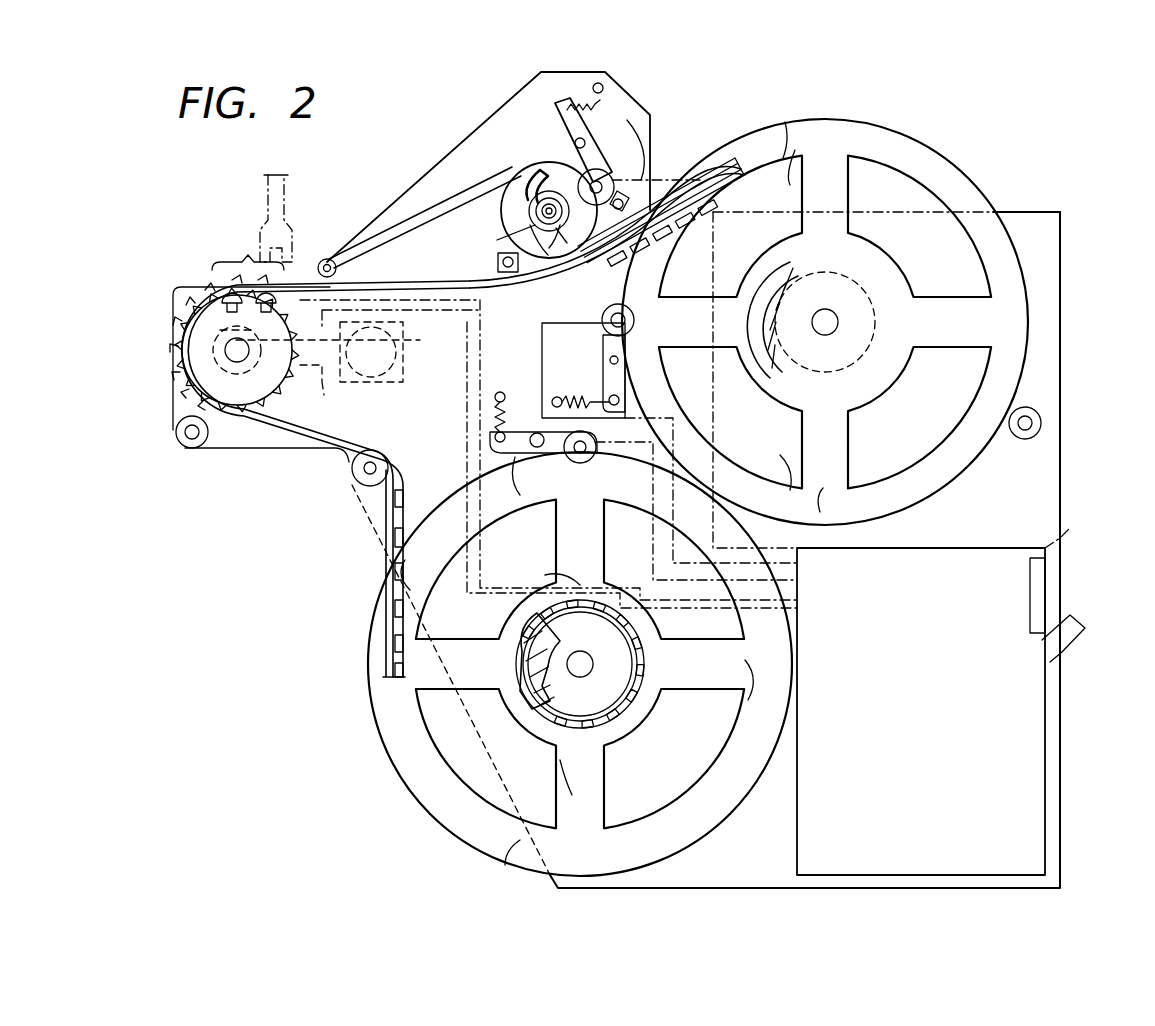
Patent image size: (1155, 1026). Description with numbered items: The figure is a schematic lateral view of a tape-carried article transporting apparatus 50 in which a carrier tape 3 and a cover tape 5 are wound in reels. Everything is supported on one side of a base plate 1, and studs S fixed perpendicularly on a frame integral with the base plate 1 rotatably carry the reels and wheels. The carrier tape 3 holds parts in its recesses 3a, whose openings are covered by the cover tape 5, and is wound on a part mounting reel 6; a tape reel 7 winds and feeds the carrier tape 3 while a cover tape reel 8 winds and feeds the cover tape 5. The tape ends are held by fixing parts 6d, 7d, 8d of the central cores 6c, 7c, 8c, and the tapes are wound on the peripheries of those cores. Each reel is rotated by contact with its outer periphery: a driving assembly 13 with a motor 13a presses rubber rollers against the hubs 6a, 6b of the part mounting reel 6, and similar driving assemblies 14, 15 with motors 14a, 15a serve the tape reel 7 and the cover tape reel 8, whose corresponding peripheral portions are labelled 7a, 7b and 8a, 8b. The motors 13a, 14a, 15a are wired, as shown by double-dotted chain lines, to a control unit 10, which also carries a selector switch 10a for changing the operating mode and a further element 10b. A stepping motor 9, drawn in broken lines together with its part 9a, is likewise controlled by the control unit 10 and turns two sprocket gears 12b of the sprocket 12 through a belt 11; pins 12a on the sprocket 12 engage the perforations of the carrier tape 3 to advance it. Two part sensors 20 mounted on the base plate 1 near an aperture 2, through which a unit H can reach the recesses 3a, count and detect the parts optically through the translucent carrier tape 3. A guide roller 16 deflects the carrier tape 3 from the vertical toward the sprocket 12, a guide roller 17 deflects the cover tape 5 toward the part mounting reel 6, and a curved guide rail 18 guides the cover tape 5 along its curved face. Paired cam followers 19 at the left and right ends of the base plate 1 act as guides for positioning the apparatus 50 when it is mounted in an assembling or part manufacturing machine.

The base plate 1 is at (1061, 340).
The aperture 2 is at (248, 267).
The carrier tape 3 is at (388, 540).
The recesses 3a is at (216, 290).
The cover tape 5 is at (392, 222).
The part mounting reel 6 is at (958, 186).
The hub 6a is at (752, 140).
The hub 6b is at (803, 138).
The central core 6c is at (868, 303).
The fixing part 6d is at (812, 270).
The tape reel 7 is at (596, 860).
The reel flange 7a is at (466, 832).
The reel flange edge 7b is at (522, 853).
The central core 7c is at (551, 699).
The fixing part 7d is at (519, 655).
The cover tape reel 8 is at (516, 192).
The pinch roller 8a is at (510, 220).
The pinch roller lever 8b is at (548, 150).
The central core 8c is at (532, 228).
The fixing part 8d is at (542, 186).
The stepping motor 9 is at (404, 372).
The capstan shaft 9a is at (342, 349).
The control unit 10 is at (1035, 545).
The selector switch 10a is at (1078, 620).
The battery terminal 10b is at (1040, 592).
The belt 11 is at (318, 394).
The sprocket 12 is at (180, 398).
The pins 12a is at (180, 345).
The sprocket gears 12b is at (215, 330).
The driving assembly 13 is at (600, 350).
The motor 13a is at (606, 310).
The driving assembly 14 is at (508, 430).
The motor 14a is at (578, 465).
The driving assembly 15 is at (575, 80).
The motor 15a is at (648, 128).
The guide roller 16 is at (352, 470).
The guide roller 17 is at (338, 270).
The curved guide rail 18 is at (655, 198).
The cam followers 19 is at (180, 438).
The part sensors 20 is at (182, 306).
The tape-carried article transporting apparatus 50 is at (1081, 219).
The unit H is at (266, 201).
The studs S is at (838, 322).